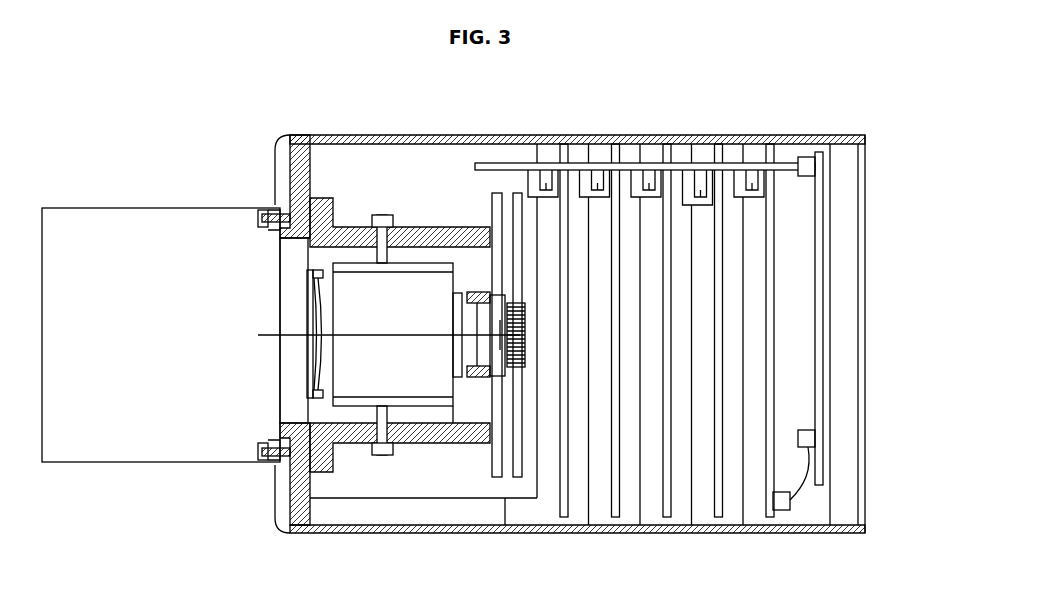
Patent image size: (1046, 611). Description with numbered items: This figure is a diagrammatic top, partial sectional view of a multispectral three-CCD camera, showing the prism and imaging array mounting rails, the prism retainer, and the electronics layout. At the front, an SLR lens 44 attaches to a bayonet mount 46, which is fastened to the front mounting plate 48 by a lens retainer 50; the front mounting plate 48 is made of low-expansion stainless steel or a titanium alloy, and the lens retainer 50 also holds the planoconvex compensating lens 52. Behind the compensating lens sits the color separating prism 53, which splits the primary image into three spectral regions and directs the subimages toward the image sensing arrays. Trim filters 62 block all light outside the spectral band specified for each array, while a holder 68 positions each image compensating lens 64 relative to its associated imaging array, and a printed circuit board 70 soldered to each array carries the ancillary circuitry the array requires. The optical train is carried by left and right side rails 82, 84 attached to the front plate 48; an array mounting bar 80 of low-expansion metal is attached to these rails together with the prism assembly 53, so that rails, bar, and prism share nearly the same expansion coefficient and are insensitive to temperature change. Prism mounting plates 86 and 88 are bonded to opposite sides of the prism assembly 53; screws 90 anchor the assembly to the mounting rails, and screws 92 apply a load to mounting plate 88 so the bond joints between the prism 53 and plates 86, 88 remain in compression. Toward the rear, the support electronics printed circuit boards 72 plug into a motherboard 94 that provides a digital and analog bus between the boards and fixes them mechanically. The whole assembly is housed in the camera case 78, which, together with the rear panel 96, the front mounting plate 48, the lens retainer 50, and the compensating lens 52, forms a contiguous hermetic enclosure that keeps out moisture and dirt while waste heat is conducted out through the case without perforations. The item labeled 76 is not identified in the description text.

The SLR lens 44 is at (137, 445).
The bayonet mount 46 is at (263, 228).
The front mounting plate 48 is at (297, 170).
The lens retainer 50 is at (268, 207).
The planoconvex compensating lens 52 is at (313, 313).
The color separating prism 53 is at (365, 360).
The trim filters 62 is at (468, 296).
The image compensating lens 64 is at (490, 293).
The holder 68 is at (480, 377).
The printed circuit board 70 is at (493, 480).
The support electronics printed circuit boards 72 is at (578, 208).
The end plate 76 is at (805, 520).
The camera case 78 is at (680, 533).
The array mounting bar 80 is at (400, 513).
The left side rail 82 is at (340, 443).
The right side rail 84 is at (347, 227).
The prism mounting plate 86 is at (453, 440).
The prism mounting plate 88 is at (410, 263).
The screws 90 is at (383, 456).
The screws 92 is at (373, 213).
The motherboard 94 is at (505, 163).
The rear panel 96 is at (867, 328).